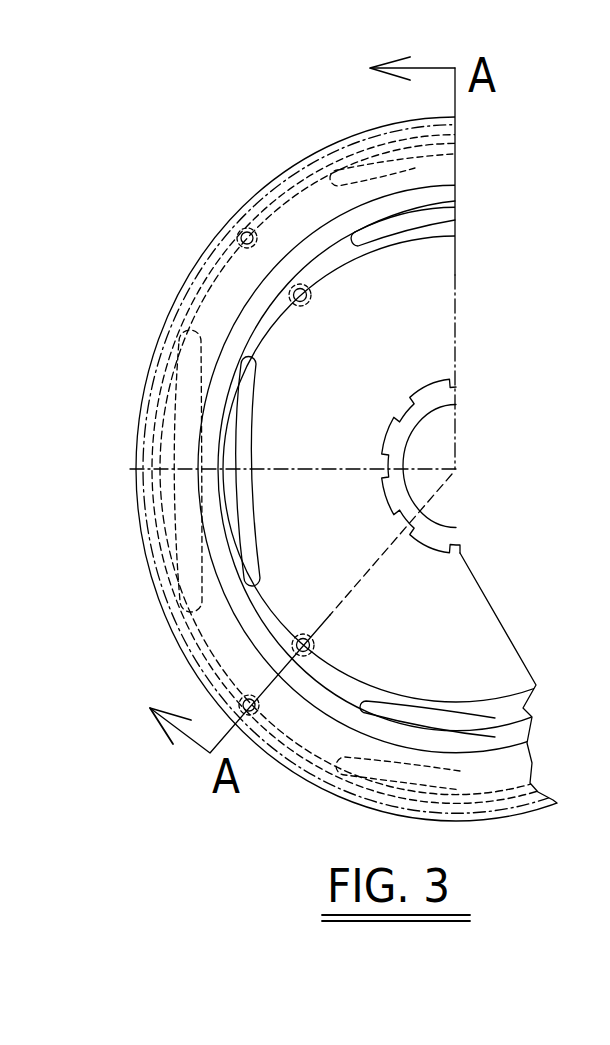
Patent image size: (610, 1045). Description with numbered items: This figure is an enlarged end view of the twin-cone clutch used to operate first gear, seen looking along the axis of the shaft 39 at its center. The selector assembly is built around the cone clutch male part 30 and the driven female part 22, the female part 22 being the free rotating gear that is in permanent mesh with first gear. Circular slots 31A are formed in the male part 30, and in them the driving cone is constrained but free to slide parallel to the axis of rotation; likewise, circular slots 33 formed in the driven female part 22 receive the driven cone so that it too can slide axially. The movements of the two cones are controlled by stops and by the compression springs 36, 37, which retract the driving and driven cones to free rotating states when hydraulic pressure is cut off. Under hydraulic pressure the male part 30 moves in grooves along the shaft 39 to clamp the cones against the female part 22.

The female part 22 is at (140, 407).
The male part 30 is at (245, 299).
The circular slots 31A is at (236, 562).
The circular slots 33 is at (173, 528).
The compression spring 36 is at (306, 300).
The compression spring 37 is at (245, 230).
The shaft 39 is at (388, 507).